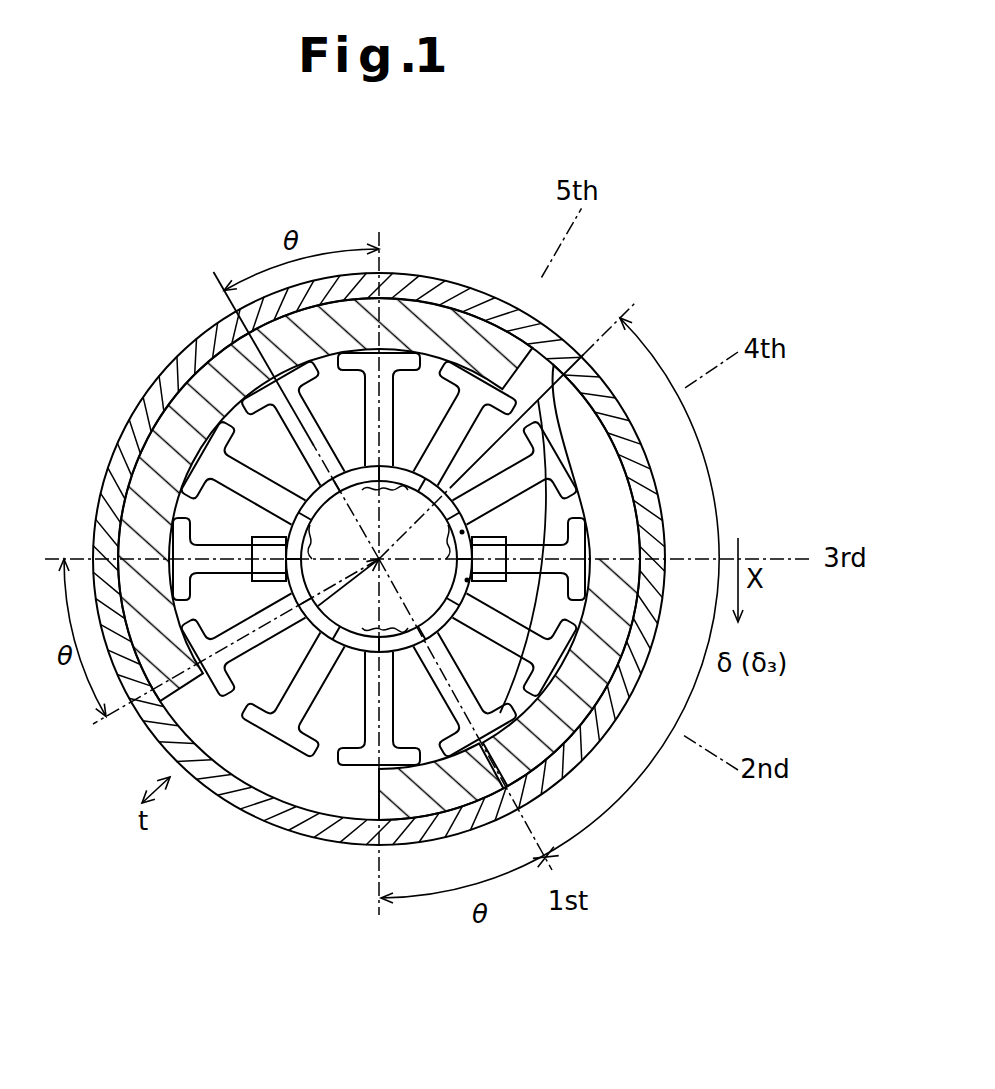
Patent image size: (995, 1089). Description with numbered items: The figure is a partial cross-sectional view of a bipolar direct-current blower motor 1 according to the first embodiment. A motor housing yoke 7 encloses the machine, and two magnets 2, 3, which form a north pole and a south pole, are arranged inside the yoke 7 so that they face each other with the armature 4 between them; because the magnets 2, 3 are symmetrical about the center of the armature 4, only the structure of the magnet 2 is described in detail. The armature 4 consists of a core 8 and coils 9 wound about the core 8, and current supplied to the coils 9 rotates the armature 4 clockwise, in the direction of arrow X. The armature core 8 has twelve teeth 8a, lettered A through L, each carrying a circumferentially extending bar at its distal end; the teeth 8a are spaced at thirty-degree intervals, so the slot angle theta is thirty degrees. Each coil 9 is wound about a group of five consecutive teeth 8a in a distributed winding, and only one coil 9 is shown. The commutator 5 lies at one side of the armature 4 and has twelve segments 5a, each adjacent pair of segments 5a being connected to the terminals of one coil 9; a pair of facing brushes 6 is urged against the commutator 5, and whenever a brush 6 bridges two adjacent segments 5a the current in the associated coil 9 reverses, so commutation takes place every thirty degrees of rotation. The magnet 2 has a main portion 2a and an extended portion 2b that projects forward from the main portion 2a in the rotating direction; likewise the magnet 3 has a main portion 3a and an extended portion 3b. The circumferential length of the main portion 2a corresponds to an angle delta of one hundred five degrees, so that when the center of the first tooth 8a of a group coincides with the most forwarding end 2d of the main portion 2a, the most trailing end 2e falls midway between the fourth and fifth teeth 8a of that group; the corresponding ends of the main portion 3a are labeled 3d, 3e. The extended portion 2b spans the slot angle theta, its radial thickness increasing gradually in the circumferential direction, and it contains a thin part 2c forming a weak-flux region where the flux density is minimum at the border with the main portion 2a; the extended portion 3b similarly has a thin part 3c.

The blower motor 1 is at (608, 252).
The magnet 2 is at (613, 667).
The main portion 2a is at (622, 760).
The extended portion 2b is at (399, 815).
The thin part 2c is at (447, 790).
The most forwarding end 2d is at (538, 791).
The most trailing end 2e is at (559, 342).
The magnet 3 is at (170, 708).
The main portion 3a is at (121, 464).
The extended portion 3b is at (405, 295).
The thin part 3c is at (245, 312).
The housing portion 3d is at (255, 356).
The housing portion 3e is at (202, 787).
The armature 4 is at (243, 803).
The commutator 5 is at (356, 466).
The segment 5a is at (379, 559).
The brush 6 is at (258, 540).
The motor housing yoke 7 is at (163, 381).
The core 8 is at (488, 383).
The tooth 8a is at (420, 360).
The coil 9 is at (536, 516).